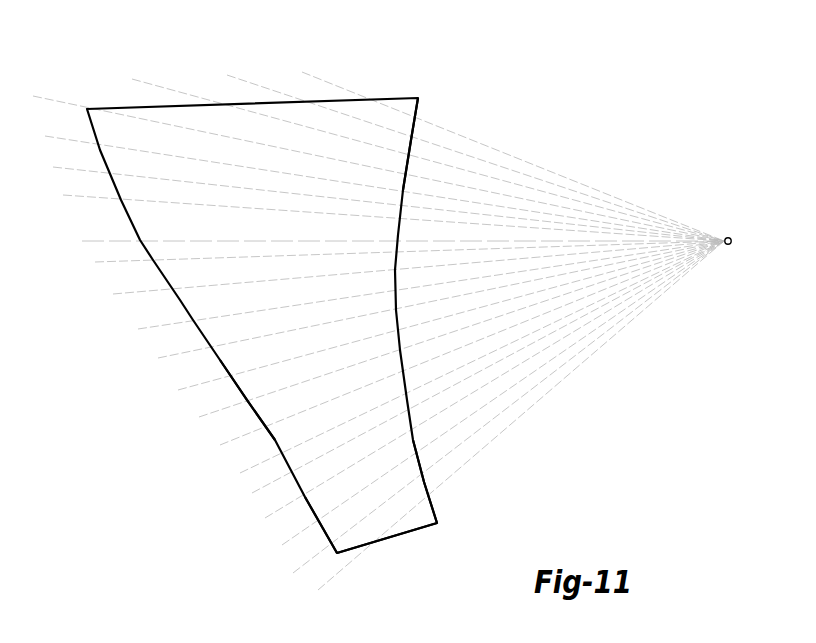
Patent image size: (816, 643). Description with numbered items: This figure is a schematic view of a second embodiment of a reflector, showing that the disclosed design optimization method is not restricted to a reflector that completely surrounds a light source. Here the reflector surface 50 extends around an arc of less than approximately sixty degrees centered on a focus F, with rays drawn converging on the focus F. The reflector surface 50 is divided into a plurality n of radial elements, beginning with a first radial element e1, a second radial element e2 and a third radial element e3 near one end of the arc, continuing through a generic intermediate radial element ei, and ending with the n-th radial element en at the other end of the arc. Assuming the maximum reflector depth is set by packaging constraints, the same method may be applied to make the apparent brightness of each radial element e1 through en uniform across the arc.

The reflector surface 50 is at (226, 96).
The n-th radial element en is at (401, 106).
The i-th radial element ei is at (248, 383).
The third radial element e3 is at (331, 527).
The second radial element e2 is at (360, 533).
The first radial element e1 is at (412, 522).
The focus F is at (736, 242).